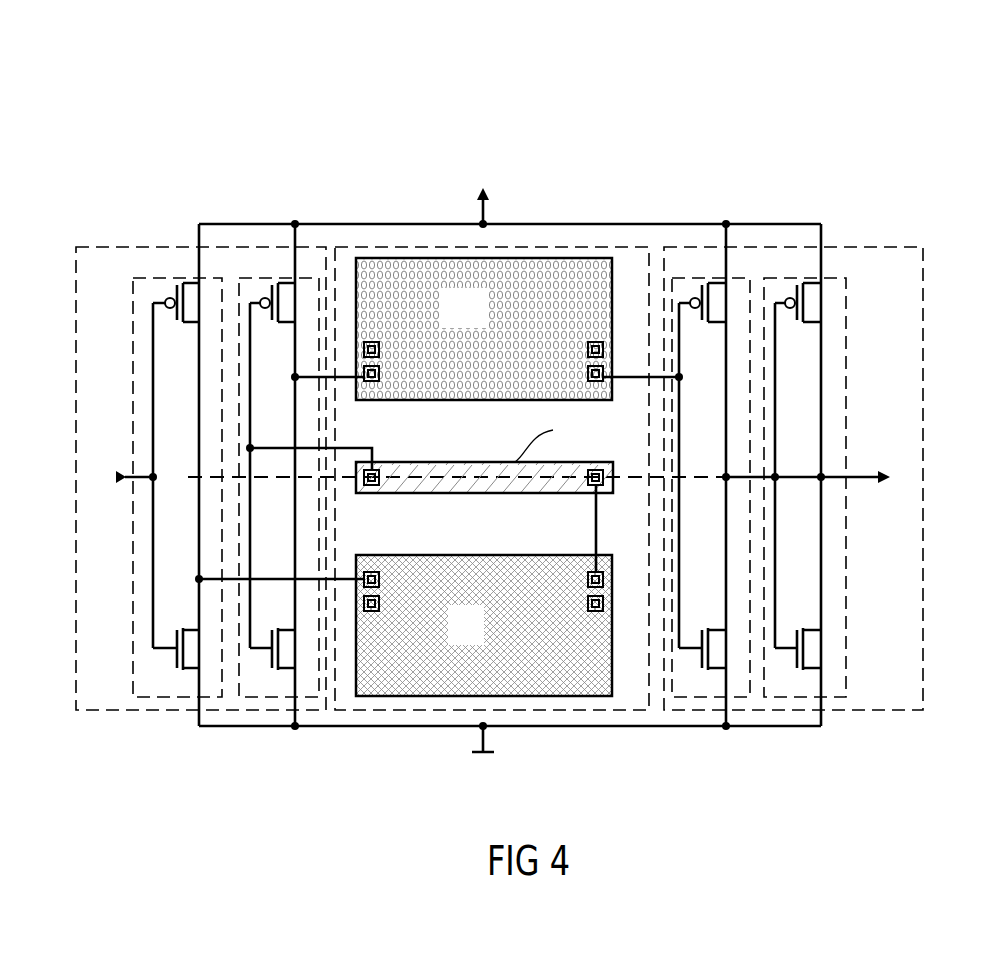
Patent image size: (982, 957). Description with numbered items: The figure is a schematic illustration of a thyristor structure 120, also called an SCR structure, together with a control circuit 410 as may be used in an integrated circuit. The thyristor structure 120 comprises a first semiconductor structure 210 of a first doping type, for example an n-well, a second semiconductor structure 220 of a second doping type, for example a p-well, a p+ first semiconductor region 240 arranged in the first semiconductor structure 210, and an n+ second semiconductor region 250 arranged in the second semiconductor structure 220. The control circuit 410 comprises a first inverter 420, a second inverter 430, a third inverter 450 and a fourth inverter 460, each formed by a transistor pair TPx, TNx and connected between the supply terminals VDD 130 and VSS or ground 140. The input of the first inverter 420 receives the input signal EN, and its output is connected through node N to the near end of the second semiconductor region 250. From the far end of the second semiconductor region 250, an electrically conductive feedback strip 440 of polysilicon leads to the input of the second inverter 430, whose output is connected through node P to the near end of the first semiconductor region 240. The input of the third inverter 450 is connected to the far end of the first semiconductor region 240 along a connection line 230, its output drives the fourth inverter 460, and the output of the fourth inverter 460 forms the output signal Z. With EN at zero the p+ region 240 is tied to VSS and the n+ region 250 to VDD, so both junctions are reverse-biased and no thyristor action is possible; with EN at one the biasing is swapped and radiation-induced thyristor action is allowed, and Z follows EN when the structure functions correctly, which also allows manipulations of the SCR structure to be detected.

The thyristor structure 120 is at (887, 131).
The supply voltage terminal VDD 130 is at (485, 212).
The ground terminal 140 is at (487, 735).
The first semiconductor structure 210 is at (640, 283).
The second semiconductor structure 220 is at (633, 700).
The gate connection line 230 is at (700, 477).
The first semiconductor region 240 is at (553, 258).
The second semiconductor region 250 is at (575, 690).
The control circuit 410 is at (137, 712).
The first inverter 420 is at (190, 698).
The second inverter 430 is at (278, 698).
The feedback strip 440 is at (537, 495).
The third inverter 450 is at (735, 698).
The fourth inverter 460 is at (830, 698).